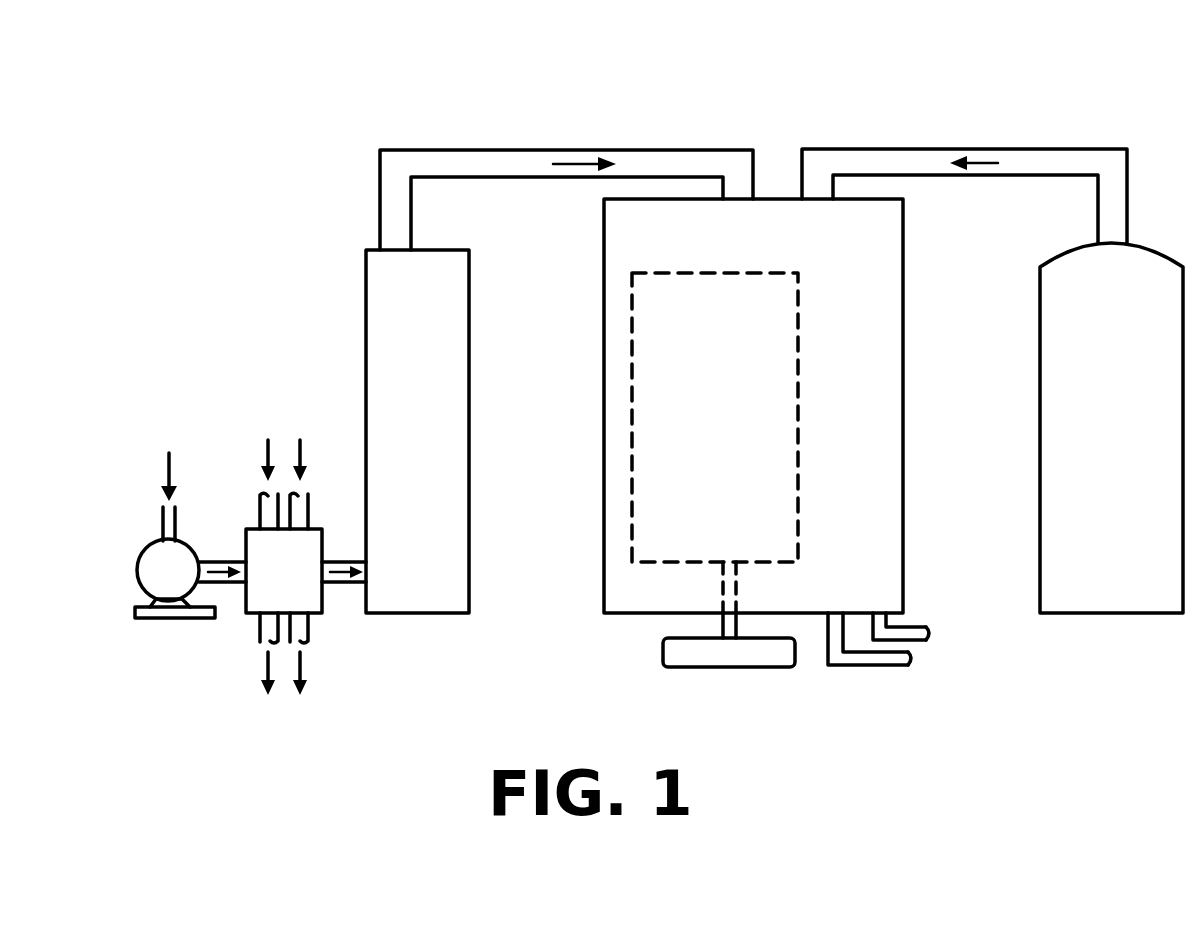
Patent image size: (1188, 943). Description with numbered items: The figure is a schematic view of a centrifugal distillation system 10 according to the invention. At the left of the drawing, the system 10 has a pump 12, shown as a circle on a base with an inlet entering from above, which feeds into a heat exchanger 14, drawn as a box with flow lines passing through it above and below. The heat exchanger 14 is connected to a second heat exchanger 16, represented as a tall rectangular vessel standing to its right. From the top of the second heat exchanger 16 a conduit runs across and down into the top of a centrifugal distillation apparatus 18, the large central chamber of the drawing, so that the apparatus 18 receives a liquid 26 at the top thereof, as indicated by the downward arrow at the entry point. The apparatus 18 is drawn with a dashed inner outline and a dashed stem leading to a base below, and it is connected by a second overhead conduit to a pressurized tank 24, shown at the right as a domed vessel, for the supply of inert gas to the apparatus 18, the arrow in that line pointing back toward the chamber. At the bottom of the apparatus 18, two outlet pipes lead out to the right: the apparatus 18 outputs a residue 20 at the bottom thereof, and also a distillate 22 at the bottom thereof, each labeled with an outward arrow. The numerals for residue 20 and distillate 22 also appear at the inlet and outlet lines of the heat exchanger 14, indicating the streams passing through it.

The centrifugal distillation system 10 is at (970, 105).
The pump 12 is at (146, 551).
The heat exchanger 14 is at (260, 548).
The second heat exchanger 16 is at (387, 278).
The centrifugal distillation apparatus 18 is at (858, 613).
The residue 20 is at (957, 658).
The distillate 22 is at (977, 631).
The pressurized tank 24 is at (1111, 428).
The liquid 26 is at (735, 165).